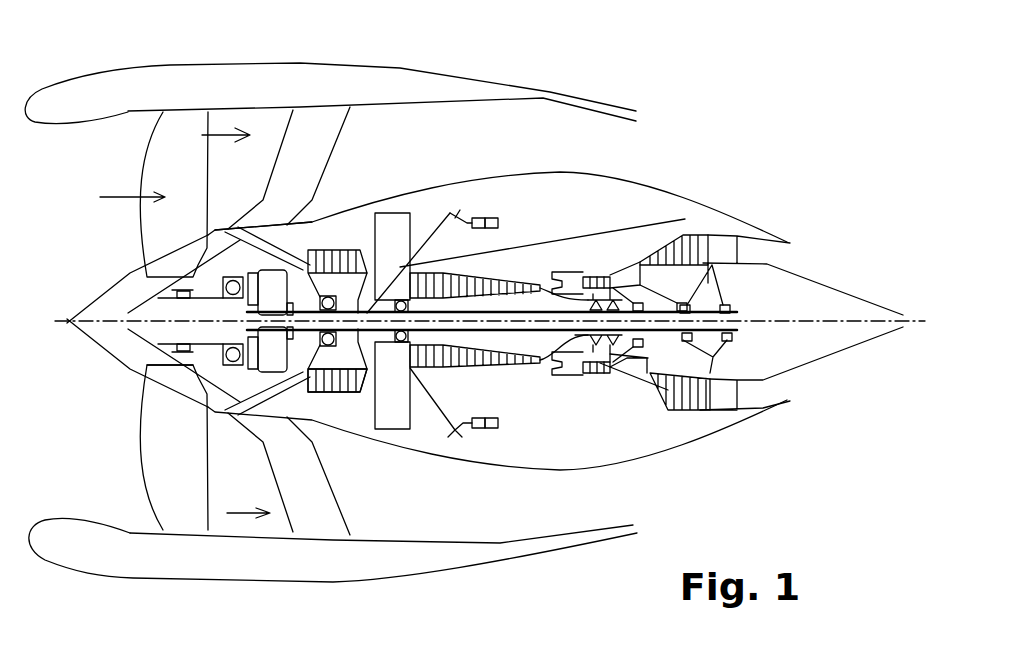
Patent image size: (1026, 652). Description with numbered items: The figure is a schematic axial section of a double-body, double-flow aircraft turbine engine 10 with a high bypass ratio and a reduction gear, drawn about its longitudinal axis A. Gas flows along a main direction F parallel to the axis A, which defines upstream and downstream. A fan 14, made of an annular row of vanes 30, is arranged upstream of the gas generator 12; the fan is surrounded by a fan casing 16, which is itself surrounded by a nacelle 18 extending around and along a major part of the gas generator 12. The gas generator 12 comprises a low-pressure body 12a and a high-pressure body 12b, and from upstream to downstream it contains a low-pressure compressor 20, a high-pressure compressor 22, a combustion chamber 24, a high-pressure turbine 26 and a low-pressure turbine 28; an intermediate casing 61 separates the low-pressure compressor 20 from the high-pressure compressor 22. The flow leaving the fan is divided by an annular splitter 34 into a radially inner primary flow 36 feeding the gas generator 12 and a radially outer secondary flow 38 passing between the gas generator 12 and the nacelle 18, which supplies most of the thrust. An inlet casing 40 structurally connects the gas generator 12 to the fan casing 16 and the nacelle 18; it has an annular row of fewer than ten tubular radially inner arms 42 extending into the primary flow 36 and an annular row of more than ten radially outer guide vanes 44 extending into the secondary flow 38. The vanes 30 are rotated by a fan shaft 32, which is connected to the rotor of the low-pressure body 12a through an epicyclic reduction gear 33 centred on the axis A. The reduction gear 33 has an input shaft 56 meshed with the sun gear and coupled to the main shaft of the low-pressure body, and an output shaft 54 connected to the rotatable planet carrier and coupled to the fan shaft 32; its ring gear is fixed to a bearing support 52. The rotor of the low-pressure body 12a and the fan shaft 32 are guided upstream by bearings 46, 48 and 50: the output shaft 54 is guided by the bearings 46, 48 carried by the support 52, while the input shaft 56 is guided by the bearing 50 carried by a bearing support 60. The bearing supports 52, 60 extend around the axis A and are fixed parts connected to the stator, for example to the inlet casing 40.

The turbine engine 10 is at (720, 112).
The gas generator 12 is at (385, 180).
The low-pressure body 12a is at (331, 415).
The high-pressure body 12b is at (530, 387).
The fan 14 is at (125, 470).
The fan casing 16 is at (180, 535).
The nacelle 18 is at (108, 90).
The low-pressure compressor 20 is at (362, 375).
The high-pressure compressor 22 is at (462, 368).
The combustion chamber 24 is at (560, 268).
The high-pressure turbine 26 is at (600, 278).
The low-pressure turbine 28 is at (683, 237).
The vanes 30 is at (183, 120).
The fan shaft 32 is at (160, 315).
The reduction gear 33 is at (270, 423).
The annular splitter 34 is at (217, 453).
The primary flow 36 is at (200, 435).
The secondary flow 38 is at (227, 133).
The inlet casing 40 is at (333, 213).
The arms 42 is at (295, 387).
The guide vanes 44 is at (318, 122).
The bearing 46 is at (177, 347).
The bearing 48 is at (150, 317).
The bearing 50 is at (388, 432).
The bearing support 52 is at (185, 398).
The output shaft 54 is at (200, 255).
The input shaft 56 is at (212, 276).
The bearing support 60 is at (283, 185).
The intermediate casing 61 is at (418, 217).
The longitudinal axis A is at (840, 322).
The main direction of gas flow F is at (120, 196).